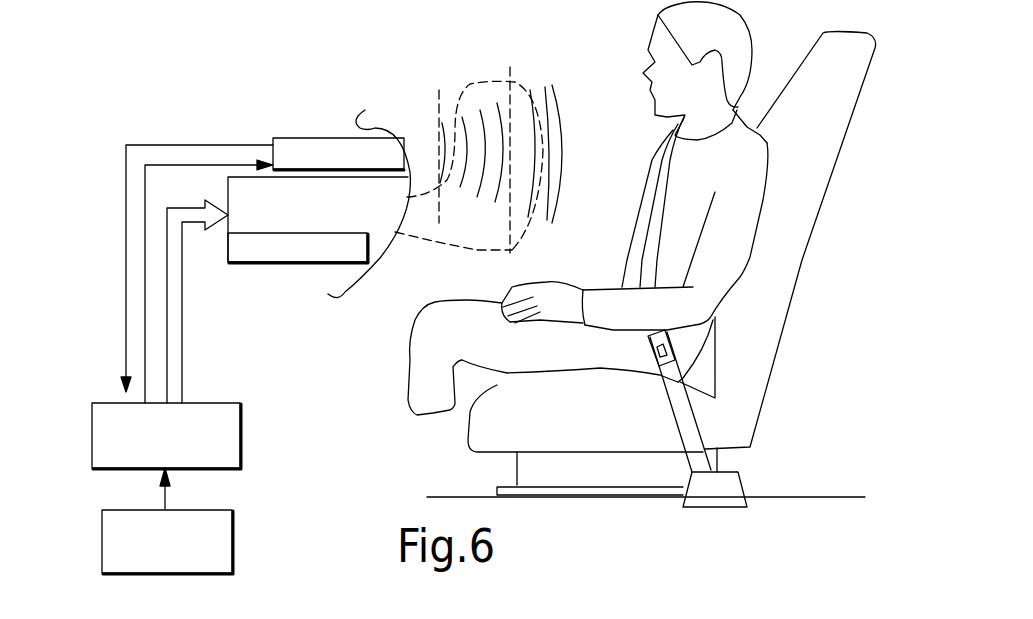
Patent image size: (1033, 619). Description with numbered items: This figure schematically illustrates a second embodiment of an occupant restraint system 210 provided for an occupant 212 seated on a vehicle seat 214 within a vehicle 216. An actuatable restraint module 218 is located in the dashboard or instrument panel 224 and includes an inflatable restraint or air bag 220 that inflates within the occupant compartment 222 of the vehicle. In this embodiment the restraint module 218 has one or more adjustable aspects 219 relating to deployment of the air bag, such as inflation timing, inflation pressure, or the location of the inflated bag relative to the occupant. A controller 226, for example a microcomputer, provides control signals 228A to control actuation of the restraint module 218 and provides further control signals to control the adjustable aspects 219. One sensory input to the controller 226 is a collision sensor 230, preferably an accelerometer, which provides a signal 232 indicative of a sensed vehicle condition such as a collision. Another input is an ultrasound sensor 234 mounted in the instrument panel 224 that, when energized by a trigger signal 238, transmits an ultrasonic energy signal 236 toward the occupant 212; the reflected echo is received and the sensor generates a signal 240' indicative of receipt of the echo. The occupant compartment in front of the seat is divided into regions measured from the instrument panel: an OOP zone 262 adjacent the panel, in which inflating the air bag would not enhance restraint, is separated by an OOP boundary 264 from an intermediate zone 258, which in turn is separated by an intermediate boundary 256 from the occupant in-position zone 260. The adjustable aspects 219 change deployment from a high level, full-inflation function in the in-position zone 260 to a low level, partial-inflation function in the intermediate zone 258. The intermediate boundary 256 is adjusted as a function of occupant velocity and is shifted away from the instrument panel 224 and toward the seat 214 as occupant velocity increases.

The occupant restraint system 210 is at (150, 72).
The occupant 212 is at (762, 157).
The vehicle seat 214 is at (795, 262).
The vehicle 216 is at (812, 338).
The restraint module 218 is at (228, 181).
The adjustable aspect 219 is at (228, 246).
The inflatable restraint 220 is at (458, 92).
The occupant compartment 222 is at (598, 63).
The instrument panel 224 is at (380, 126).
The controller 226 is at (104, 396).
The control signals 228A is at (182, 342).
The collision sensor 230 is at (108, 511).
The collision signal 232 is at (166, 506).
The ultrasound sensor 234 is at (290, 137).
The ultrasonic energy signal 236 is at (516, 100).
The trigger signal 238 is at (146, 197).
The echo signal 240' is at (197, 249).
The intermediate boundary 256 is at (511, 245).
The intermediate zone 258 is at (491, 73).
The occupant in-position zone 260 is at (613, 156).
The OOP zone 262 is at (438, 141).
The OOP boundary 264 is at (440, 213).